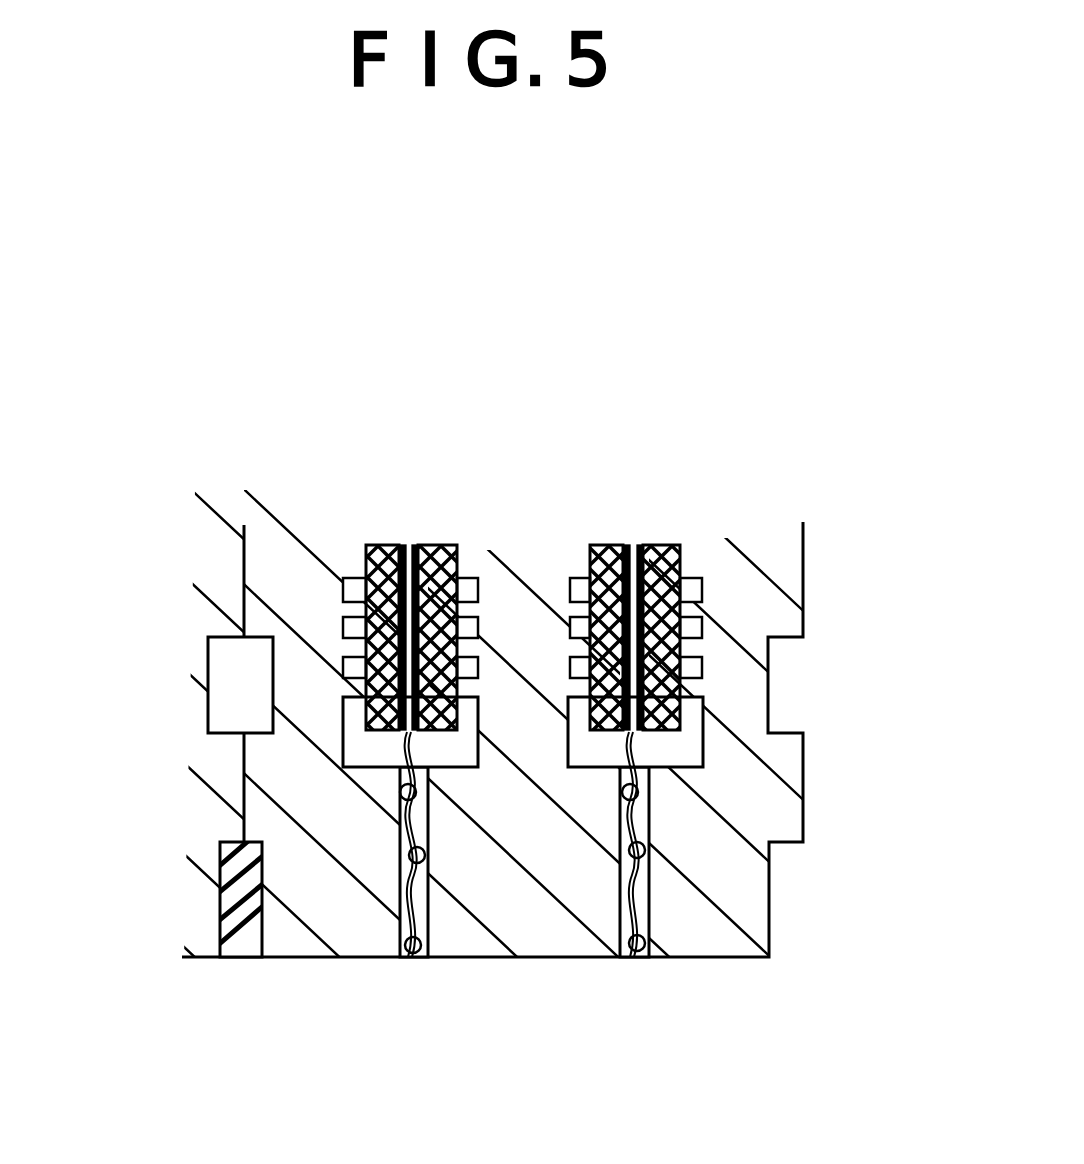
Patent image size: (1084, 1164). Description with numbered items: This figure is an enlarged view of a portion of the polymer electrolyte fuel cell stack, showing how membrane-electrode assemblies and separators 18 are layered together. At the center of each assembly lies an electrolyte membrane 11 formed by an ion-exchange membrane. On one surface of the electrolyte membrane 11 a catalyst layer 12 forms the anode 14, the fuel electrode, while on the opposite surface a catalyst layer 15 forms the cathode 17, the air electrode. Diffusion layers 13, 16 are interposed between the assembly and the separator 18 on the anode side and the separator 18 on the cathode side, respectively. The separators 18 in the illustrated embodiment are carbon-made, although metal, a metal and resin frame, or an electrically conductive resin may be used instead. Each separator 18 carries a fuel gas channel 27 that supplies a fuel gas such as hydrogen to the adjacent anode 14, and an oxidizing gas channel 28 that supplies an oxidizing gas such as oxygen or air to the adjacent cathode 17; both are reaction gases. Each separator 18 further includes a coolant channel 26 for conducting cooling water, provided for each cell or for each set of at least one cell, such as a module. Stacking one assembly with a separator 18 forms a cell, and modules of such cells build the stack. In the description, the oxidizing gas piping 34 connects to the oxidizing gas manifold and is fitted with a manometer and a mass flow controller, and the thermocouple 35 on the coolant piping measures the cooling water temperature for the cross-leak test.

The electrolyte membrane 11 is at (408, 548).
The catalyst layer 12 is at (390, 546).
The diffusion layer 13 is at (378, 548).
The anode 14 is at (437, 487).
The catalyst layer 15 is at (443, 546).
The diffusion layer 16 is at (470, 548).
The cathode 17 is at (579, 486).
The separator 18 is at (218, 570).
The coolant channel 26 is at (232, 706).
The fuel gas channel 27 is at (345, 591).
The oxidizing gas channel 28 is at (497, 552).
The oxidizing gas piping 34 is at (405, 957).
The thermocouple 35 is at (226, 850).